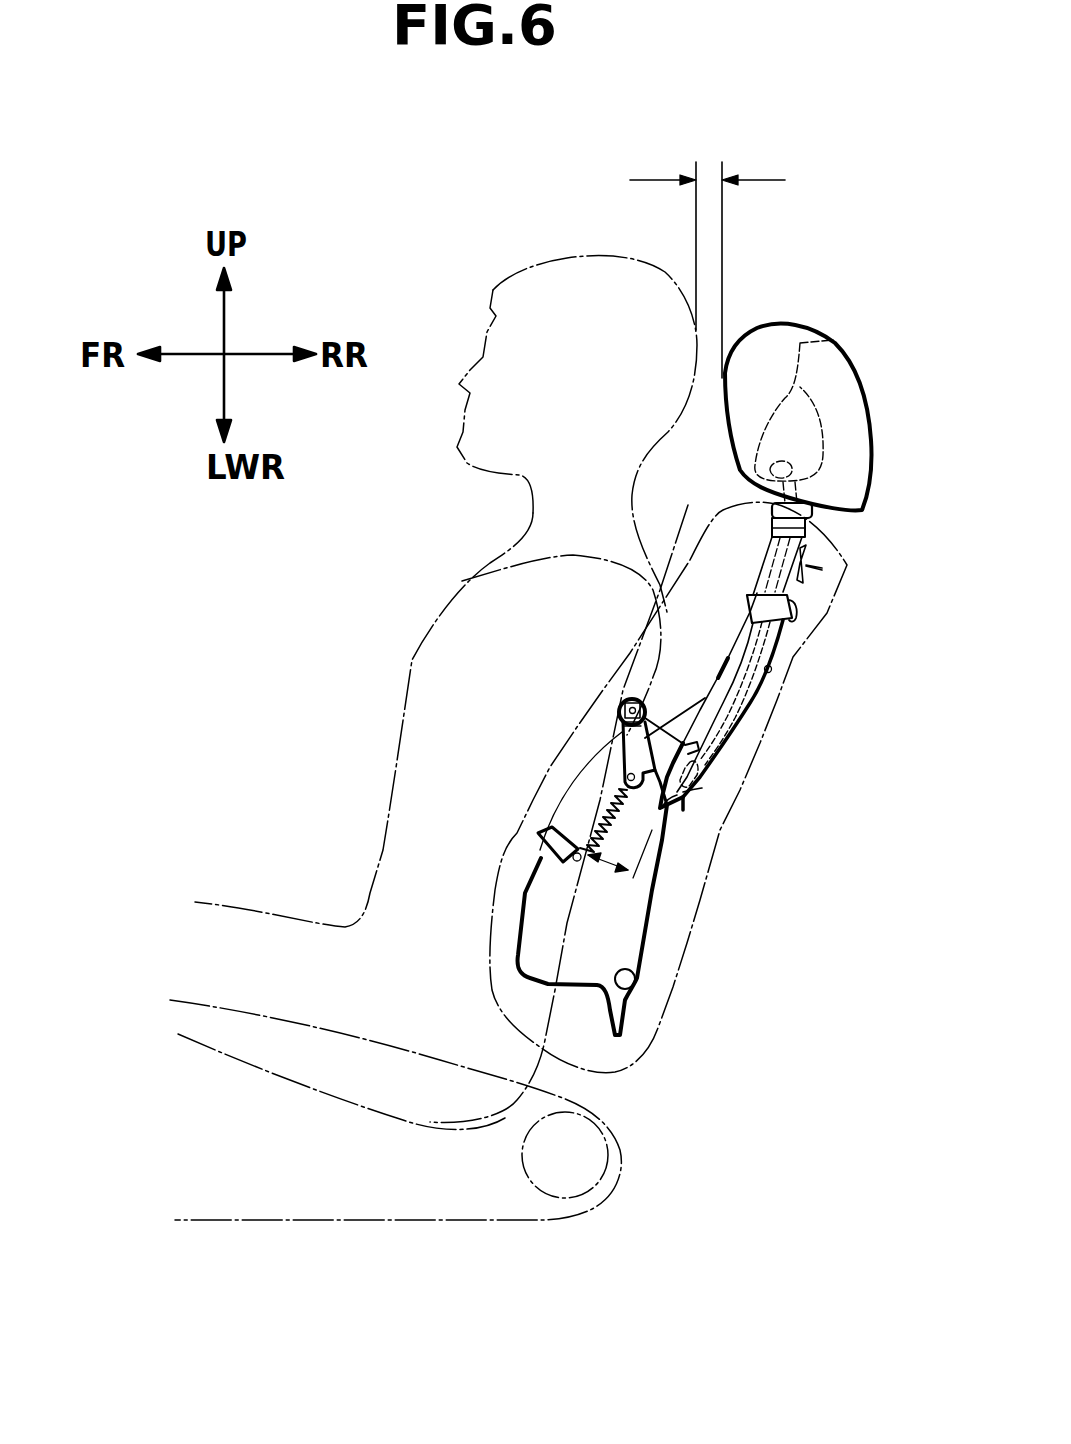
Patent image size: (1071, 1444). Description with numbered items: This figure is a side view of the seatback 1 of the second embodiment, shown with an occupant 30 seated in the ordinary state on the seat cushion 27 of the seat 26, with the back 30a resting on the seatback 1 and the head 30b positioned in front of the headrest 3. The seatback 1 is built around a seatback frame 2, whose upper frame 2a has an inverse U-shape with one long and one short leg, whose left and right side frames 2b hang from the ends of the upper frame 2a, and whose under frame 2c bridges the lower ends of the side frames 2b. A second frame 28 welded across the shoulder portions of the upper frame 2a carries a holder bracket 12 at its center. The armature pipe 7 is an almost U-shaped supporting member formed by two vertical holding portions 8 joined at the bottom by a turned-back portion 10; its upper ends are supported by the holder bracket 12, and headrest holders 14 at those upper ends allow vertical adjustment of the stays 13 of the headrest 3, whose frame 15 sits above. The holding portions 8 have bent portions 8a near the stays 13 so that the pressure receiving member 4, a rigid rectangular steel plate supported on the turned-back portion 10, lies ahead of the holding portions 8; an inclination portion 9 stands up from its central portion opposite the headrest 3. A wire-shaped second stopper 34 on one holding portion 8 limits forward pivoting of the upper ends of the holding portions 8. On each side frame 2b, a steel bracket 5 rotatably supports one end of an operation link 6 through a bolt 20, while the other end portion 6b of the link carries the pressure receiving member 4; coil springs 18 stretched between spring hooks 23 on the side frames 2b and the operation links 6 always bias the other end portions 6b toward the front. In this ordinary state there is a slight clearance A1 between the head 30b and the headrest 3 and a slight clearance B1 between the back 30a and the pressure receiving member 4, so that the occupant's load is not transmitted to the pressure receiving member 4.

The seatback 1 is at (876, 788).
The seatback frame 2 is at (792, 634).
The upper frame 2a is at (740, 645).
The side frames 2b is at (633, 932).
The under frame 2c is at (634, 982).
The headrest 3 is at (876, 393).
The pressure receiving member 4 is at (680, 830).
The brackets 5 is at (653, 700).
The operation links 6 is at (613, 730).
The other end portions 6b is at (672, 855).
The armature pipe 7 is at (812, 768).
The holding portions 8 is at (712, 763).
The bent portions 8a is at (745, 703).
The inclination portion 9 is at (683, 695).
The turned-back portion 10 is at (700, 793).
The holder bracket 12 is at (755, 595).
The stays 13 is at (780, 657).
The headrest holders 14 is at (813, 520).
The frame of the headrest 15 is at (825, 343).
The coil springs 18 is at (580, 828).
The bolts 20 is at (626, 706).
The spring hooks 23 is at (540, 852).
The seat 26 is at (654, 1090).
The seat cushion 27 is at (312, 1215).
The second frame 28 is at (793, 607).
The occupant 30 is at (365, 750).
The back 30a is at (462, 581).
The head 30b is at (517, 280).
The second stopper 34 is at (775, 668).
The clearance A1 is at (707, 251).
The clearance B1 is at (620, 852).